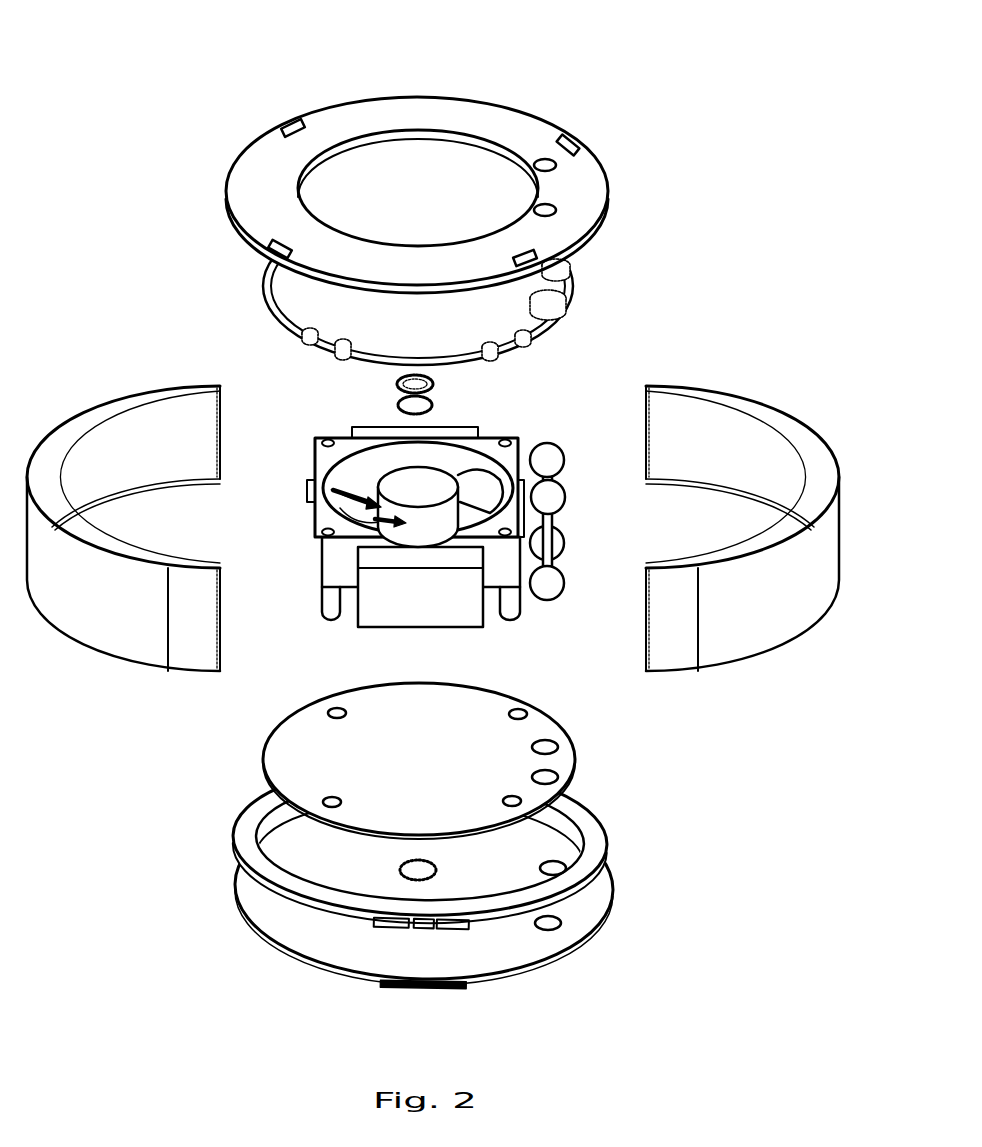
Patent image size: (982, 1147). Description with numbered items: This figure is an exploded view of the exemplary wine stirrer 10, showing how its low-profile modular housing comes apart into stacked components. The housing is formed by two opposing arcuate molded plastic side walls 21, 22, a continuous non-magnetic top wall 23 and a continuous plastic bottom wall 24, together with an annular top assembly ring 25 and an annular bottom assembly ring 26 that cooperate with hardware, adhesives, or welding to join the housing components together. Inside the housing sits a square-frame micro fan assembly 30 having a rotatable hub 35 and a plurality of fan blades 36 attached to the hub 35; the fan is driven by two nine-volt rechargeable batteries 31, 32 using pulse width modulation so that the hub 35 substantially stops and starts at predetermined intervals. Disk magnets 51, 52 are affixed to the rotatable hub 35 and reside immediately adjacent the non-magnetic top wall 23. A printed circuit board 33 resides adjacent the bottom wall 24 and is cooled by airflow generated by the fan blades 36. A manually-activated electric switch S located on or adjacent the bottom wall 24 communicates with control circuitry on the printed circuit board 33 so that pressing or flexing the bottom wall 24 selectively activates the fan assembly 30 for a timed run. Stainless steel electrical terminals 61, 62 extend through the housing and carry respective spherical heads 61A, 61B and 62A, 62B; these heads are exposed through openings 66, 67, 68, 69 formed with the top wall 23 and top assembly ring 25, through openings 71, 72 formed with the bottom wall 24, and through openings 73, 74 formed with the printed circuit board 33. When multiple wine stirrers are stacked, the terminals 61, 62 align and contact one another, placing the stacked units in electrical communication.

The wine stirrer 10 is at (100, 94).
The side wall 21 is at (104, 442).
The side wall 22 is at (802, 468).
The top wall 23 is at (440, 222).
The bottom wall 24 is at (465, 899).
The top assembly ring 25 is at (450, 167).
The bottom assembly ring 26 is at (460, 846).
The fan assembly 30 is at (374, 482).
The battery 31 is at (462, 432).
The battery 32 is at (433, 609).
The printed circuit board 33 is at (467, 761).
The rotatable hub 35 is at (431, 497).
The fan blades 36 is at (335, 512).
The disk magnet 51 is at (436, 384).
The disk magnet 52 is at (398, 405).
The electrical terminal 61 is at (588, 503).
The spherical head 61A is at (549, 450).
The spherical head 61B is at (557, 548).
The electrical terminal 62 is at (556, 525).
The spherical head 62A is at (553, 498).
The spherical head 62B is at (555, 587).
The opening 66 is at (583, 286).
The opening 67 is at (548, 328).
The opening 68 is at (557, 161).
The opening 69 is at (557, 207).
The opening 71 is at (549, 858).
The opening 72 is at (556, 922).
The opening 73 is at (550, 736).
The opening 74 is at (553, 768).
The electric switch S is at (427, 864).